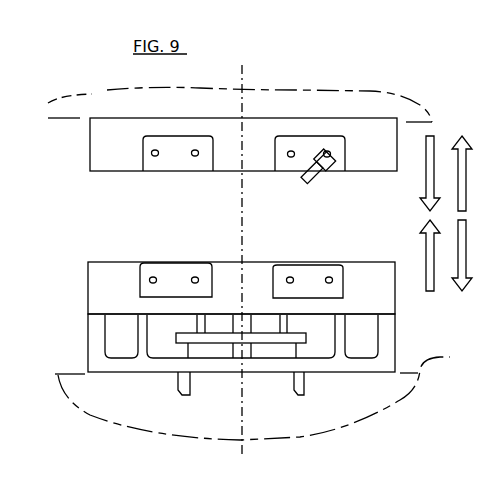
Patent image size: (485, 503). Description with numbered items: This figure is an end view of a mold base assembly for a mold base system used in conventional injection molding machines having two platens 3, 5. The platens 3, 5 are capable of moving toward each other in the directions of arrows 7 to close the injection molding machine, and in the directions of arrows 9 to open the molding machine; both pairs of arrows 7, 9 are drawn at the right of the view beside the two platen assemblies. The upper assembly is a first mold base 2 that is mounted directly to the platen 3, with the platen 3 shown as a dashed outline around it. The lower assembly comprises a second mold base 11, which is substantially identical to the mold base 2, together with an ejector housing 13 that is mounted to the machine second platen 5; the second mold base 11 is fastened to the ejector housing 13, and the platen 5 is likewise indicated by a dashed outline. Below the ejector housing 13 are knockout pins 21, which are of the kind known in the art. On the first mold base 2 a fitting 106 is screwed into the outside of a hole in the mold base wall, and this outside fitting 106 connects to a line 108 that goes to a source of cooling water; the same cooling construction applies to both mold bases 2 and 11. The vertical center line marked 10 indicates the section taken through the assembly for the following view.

The first mold base 2 is at (88, 145).
The platen 3 is at (107, 90).
The platen 5 is at (260, 395).
The arrows 7 is at (420, 266).
The arrows 9 is at (468, 165).
The section line 10 is at (265, 68).
The second mold base 11 is at (88, 286).
The ejector housing 13 is at (88, 346).
The knockout pins 21 is at (176, 388).
The fitting 106 is at (337, 152).
The line 108 is at (313, 168).